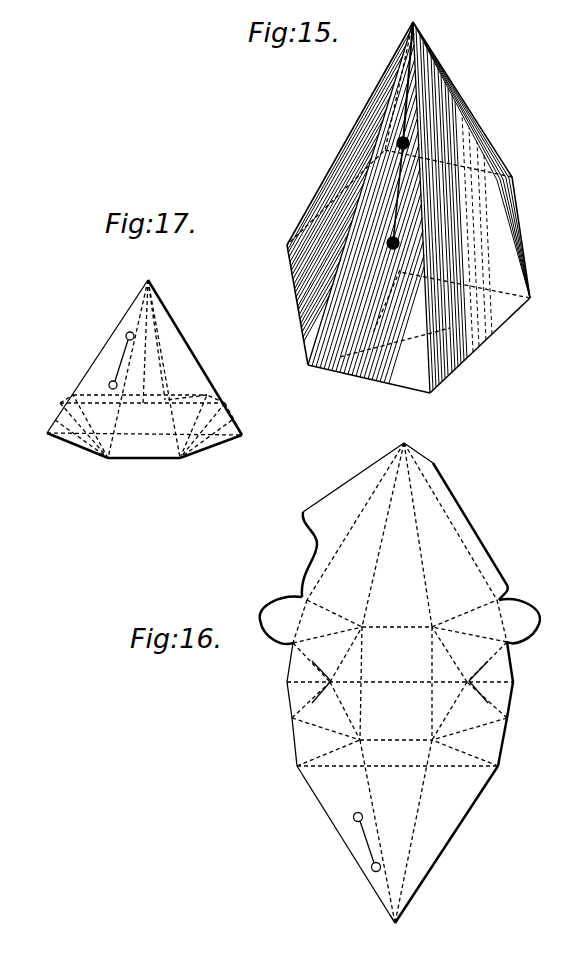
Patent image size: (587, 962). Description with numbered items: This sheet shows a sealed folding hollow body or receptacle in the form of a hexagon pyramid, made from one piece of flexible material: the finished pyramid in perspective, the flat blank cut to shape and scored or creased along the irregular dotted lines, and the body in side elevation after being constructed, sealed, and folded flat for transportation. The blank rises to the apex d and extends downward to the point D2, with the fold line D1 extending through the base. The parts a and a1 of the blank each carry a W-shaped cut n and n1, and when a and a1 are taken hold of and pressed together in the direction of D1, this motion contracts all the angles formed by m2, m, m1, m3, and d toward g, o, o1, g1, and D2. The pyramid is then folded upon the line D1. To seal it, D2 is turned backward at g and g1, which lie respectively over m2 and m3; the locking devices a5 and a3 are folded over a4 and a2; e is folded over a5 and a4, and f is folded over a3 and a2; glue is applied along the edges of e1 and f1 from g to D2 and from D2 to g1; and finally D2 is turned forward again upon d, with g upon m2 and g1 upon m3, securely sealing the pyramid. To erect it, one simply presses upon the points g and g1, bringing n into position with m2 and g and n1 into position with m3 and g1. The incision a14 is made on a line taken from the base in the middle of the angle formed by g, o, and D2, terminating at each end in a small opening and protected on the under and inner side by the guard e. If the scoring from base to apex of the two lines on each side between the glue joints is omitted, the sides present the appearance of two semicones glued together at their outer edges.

In FIG. 15, the apex d is at (350, 130).
In FIG. 17, the apex d is at (113, 360).
In FIG. 16, the apex d is at (400, 524).
In FIG. 15, the base point D2 is at (471, 157).
In FIG. 17, the base point D2 is at (195, 351).
In FIG. 16, the base point D2 is at (392, 934).
In FIG. 15, the folding line D' D1 is at (395, 250).
In FIG. 17, the folding line D' D1 is at (142, 391).
In FIG. 16, the folding line D' D1 is at (399, 689).
In FIG. 15, the incision a14 is at (410, 138).
In FIG. 17, the incision a14 is at (126, 333).
In FIG. 16, the incision a14 is at (372, 870).
In FIG. 15, the angle point m is at (287, 245).
In FIG. 17, the angle point m is at (136, 468).
In FIG. 16, the angle point m is at (396, 680).
In FIG. 15, the angle point m' m1 is at (387, 147).
In FIG. 17, the angle point m' m1 is at (205, 456).
In FIG. 16, the angle point m' m1 is at (427, 680).
In FIG. 16, the angle point m2 is at (334, 604).
In FIG. 16, the angle point m3 is at (464, 604).
In FIG. 15, the base point g is at (359, 207).
In FIG. 17, the base point g is at (67, 443).
In FIG. 16, the base point g is at (386, 758).
In FIG. 15, the base point g' g1 is at (508, 178).
In FIG. 17, the base point g' g1 is at (156, 441).
In FIG. 16, the base point g' g1 is at (480, 758).
In FIG. 15, the base point o is at (471, 219).
In FIG. 17, the base point o is at (97, 436).
In FIG. 16, the base point o is at (396, 822).
In FIG. 15, the base point o' o1 is at (476, 292).
In FIG. 17, the base point o' o1 is at (195, 436).
In FIG. 16, the base point o' o1 is at (413, 822).
In FIG. 17, the part a is at (142, 377).
In FIG. 16, the part a is at (390, 680).
In FIG. 17, the part a' a1 is at (202, 405).
In FIG. 16, the part a' a1 is at (522, 680).
In FIG. 17, the flap a2 is at (218, 435).
In FIG. 16, the flap a2 is at (480, 742).
In FIG. 17, the locking device a3 is at (239, 415).
In FIG. 16, the locking device a3 is at (486, 634).
In FIG. 17, the flap a4 is at (73, 434).
In FIG. 16, the flap a4 is at (313, 742).
In FIG. 17, the locking device a5 is at (75, 427).
In FIG. 16, the locking device a5 is at (310, 635).
In FIG. 17, the W-shaped cut n is at (129, 385).
In FIG. 16, the W-shaped cut n is at (337, 683).
In FIG. 17, the W-shaped cut n1 is at (201, 387).
In FIG. 16, the W-shaped cut n1 is at (460, 683).
In FIG. 16, the guard e is at (301, 546).
In FIG. 16, the flap f is at (470, 531).
In FIG. 16, the glued edge e' e1 is at (346, 844).
In FIG. 16, the glued edge f' f1 is at (446, 844).